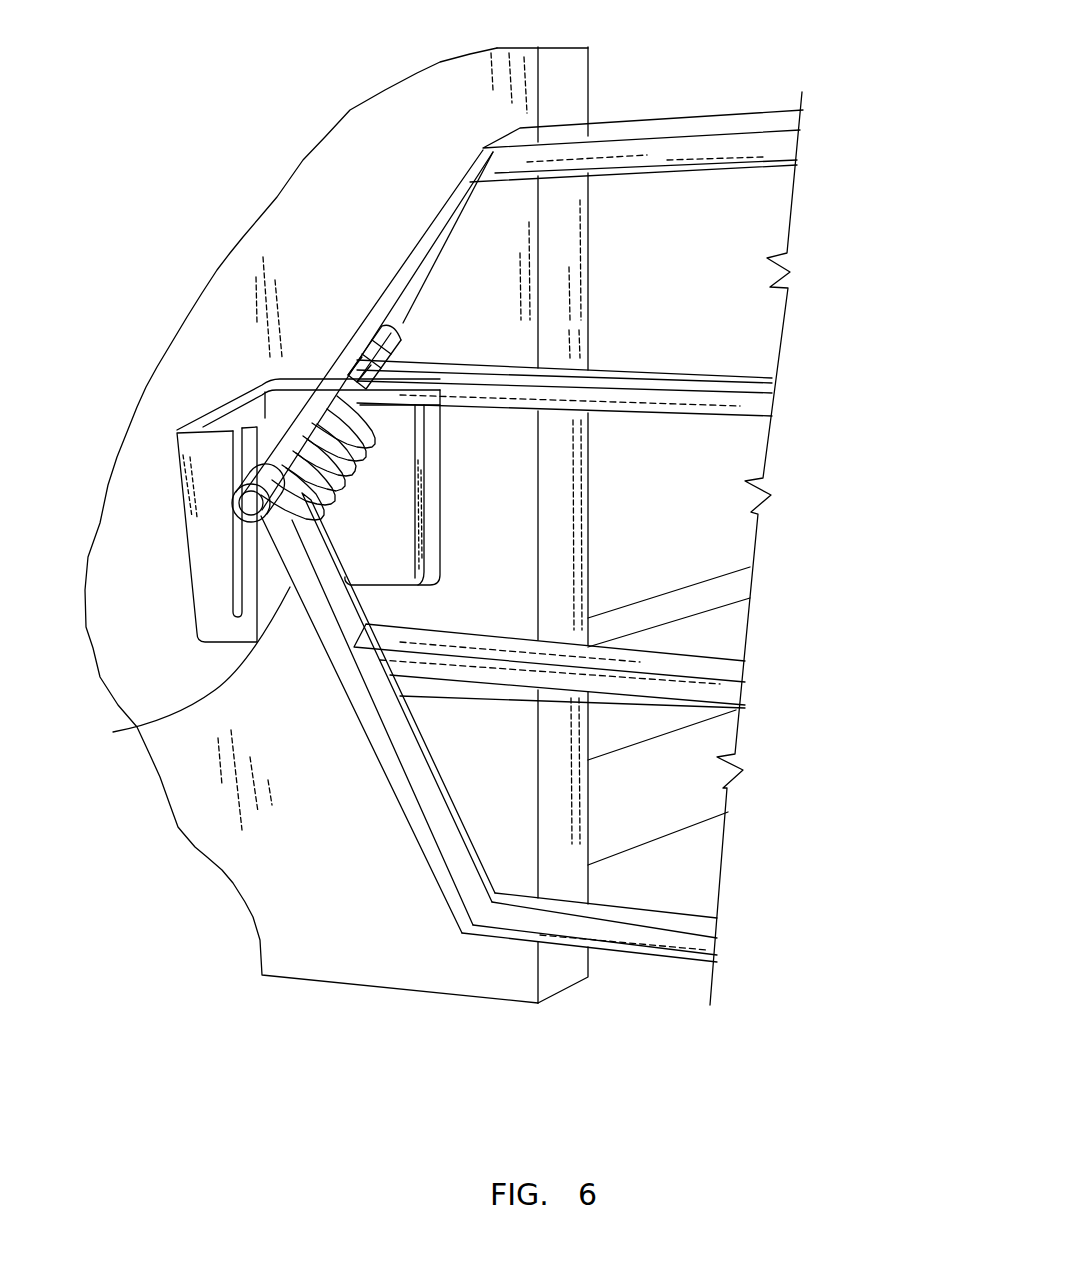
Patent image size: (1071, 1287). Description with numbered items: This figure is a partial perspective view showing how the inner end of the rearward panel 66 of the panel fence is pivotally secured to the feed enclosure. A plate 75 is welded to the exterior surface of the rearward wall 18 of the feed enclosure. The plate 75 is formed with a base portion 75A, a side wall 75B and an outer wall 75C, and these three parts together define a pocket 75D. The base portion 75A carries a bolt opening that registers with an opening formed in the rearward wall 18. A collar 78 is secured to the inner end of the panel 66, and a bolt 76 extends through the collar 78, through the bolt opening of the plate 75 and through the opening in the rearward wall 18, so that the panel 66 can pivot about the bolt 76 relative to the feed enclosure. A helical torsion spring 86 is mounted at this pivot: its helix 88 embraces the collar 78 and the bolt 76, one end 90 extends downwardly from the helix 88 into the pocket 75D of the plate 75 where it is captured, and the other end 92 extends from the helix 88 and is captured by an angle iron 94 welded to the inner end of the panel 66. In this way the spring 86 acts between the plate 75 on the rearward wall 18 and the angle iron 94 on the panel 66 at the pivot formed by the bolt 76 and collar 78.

The rearward wall 18 is at (178, 772).
The rearward panel 66 is at (634, 124).
The plate 75 is at (285, 415).
The base portion 75A is at (392, 550).
The side wall 75B is at (149, 477).
The outer wall 75C is at (205, 528).
The pocket 75D is at (267, 417).
The bolt 76 is at (251, 512).
The collar 78 is at (183, 670).
The helical torsion spring 86 is at (357, 502).
The helix 88 is at (380, 438).
The end 90 is at (233, 597).
The end 92 is at (350, 345).
The angle iron 94 is at (400, 327).